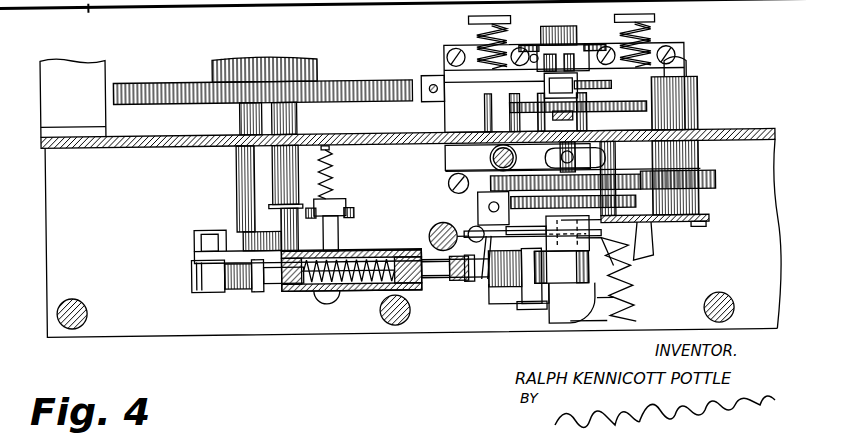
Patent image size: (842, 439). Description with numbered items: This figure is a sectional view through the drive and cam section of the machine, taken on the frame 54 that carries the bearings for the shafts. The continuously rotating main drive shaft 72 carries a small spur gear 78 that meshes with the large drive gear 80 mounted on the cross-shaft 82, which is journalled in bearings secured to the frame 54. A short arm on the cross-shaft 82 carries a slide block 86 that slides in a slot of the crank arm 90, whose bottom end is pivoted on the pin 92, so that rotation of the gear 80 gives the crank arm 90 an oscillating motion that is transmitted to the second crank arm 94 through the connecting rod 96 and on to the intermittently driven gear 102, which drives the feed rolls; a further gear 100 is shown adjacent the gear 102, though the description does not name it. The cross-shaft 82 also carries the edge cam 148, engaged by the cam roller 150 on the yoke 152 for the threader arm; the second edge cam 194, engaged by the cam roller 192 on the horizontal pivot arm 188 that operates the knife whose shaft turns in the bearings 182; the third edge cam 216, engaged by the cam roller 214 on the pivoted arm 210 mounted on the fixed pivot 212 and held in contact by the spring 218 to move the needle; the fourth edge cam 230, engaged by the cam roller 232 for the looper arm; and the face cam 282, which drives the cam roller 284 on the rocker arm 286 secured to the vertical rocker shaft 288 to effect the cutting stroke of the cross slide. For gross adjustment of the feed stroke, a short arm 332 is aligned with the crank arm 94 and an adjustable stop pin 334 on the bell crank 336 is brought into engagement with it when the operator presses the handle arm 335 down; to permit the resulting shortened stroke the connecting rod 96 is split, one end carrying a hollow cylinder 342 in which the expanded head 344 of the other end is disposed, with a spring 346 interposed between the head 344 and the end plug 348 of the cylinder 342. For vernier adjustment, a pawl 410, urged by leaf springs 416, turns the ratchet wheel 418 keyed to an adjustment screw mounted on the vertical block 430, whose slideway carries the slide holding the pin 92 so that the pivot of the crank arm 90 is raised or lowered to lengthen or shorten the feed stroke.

The frame 54 is at (119, 146).
The drive shaft 72 is at (702, 230).
The small spur gear 78 is at (716, 185).
The large drive gear 80 is at (476, 228).
The cross-shaft 82 is at (574, 280).
The slide block 86 is at (523, 306).
The crank arm 90 is at (513, 285).
The pin 92 is at (562, 320).
The second crank arm 94 is at (208, 253).
The connecting rod 96 is at (361, 292).
The gear 100 is at (268, 73).
The gear 102 is at (170, 80).
The rotary edge cam 148 is at (652, 50).
The cam roller 150 is at (518, 42).
The yoke 152 is at (577, 62).
The bearings 182 is at (575, 37).
The horizontal pivot arm 188 is at (447, 82).
The cam roller 192 is at (548, 96).
The second edge cam 194 is at (611, 89).
The pivoted arm 210 is at (500, 297).
The fixed pivot 212 is at (630, 283).
The cam roller 214 is at (541, 205).
The third edge cam 216 is at (648, 207).
The spring 218 is at (441, 225).
The fourth edge cam 230 is at (655, 106).
The cam roller 232 is at (553, 113).
The face cam 282 is at (592, 168).
The cam roller 284 is at (597, 116).
The rocker arm 286 is at (561, 158).
The vertical rocker shaft 288 is at (490, 159).
The short arm 332 is at (240, 228).
The adjustable stop pin 334 is at (319, 208).
The handle arm 335 is at (322, 303).
The bell crank 336 is at (350, 211).
The hollow cylinder 342 is at (333, 168).
The expanded head 344 is at (402, 291).
The spring 346 is at (360, 258).
The end plug 348 is at (282, 288).
The pawl 410 is at (642, 272).
The leaf springs 416 is at (652, 254).
The ratchet wheel 418 is at (620, 323).
The vertical block 430 is at (625, 305).